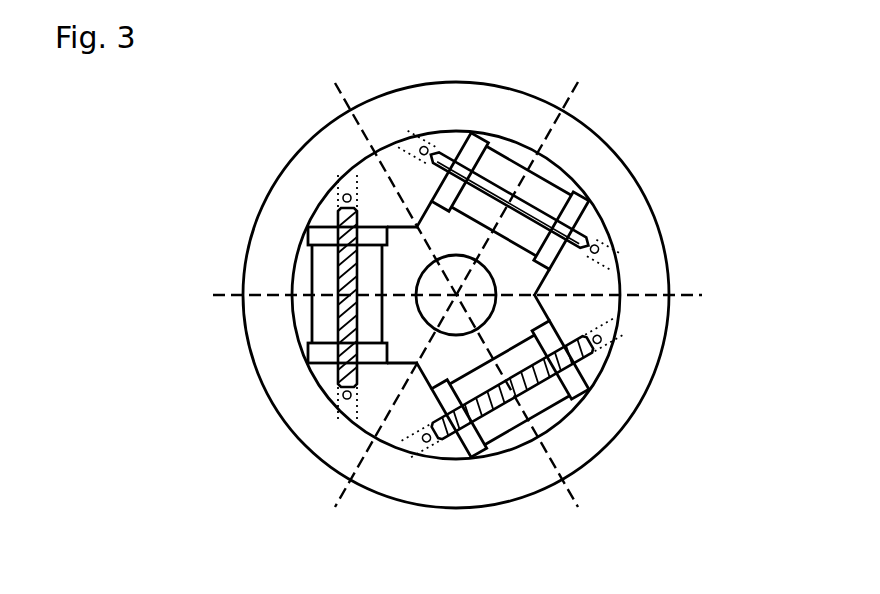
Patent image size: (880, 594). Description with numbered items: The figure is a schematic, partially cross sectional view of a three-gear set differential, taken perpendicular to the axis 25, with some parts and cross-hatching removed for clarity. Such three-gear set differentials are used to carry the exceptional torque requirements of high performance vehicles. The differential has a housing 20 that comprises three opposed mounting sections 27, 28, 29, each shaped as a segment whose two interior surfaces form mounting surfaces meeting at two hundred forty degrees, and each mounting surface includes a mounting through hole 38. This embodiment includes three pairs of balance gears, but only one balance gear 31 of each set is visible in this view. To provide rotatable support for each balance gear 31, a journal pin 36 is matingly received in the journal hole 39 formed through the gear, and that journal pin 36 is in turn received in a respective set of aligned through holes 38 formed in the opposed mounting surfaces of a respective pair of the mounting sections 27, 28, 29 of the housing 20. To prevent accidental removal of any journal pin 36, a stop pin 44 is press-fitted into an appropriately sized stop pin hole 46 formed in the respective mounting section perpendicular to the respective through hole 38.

The housing 20 is at (323, 153).
The axis 25 is at (465, 282).
The mounting section 27 is at (375, 178).
The mounting section 28 is at (602, 308).
The mounting section 29 is at (385, 398).
The balance gear 31 is at (323, 237).
The journal pin 36 is at (337, 320).
The through hole 38 is at (615, 255).
The journal hole 39 is at (343, 265).
The stop pin 44 is at (430, 145).
The stop pin hole 46 is at (620, 325).